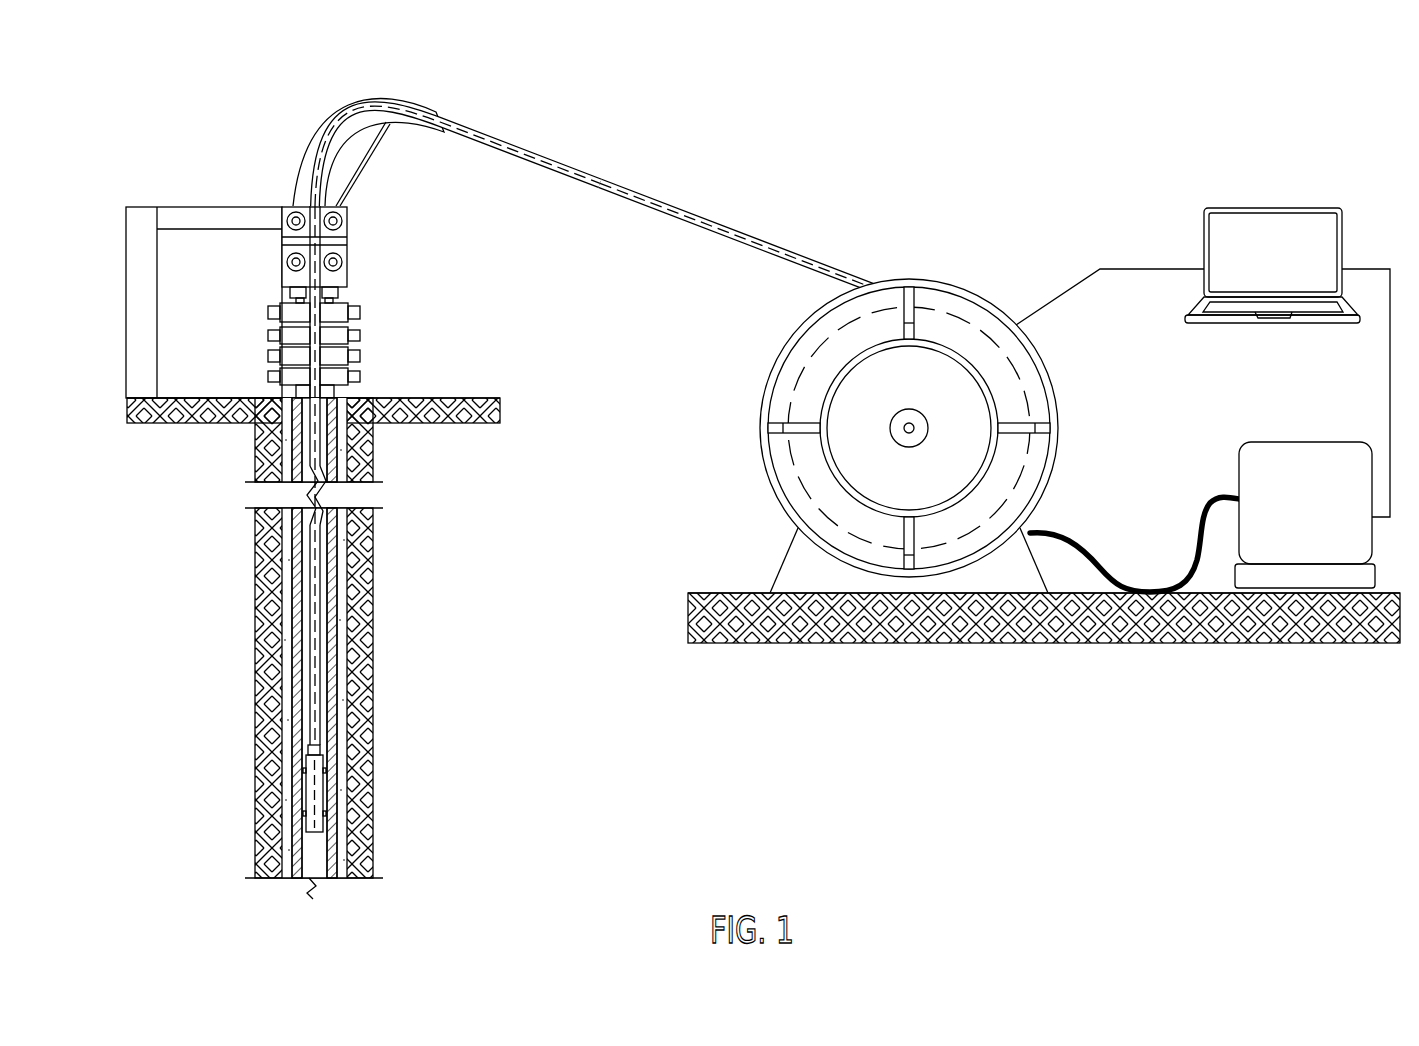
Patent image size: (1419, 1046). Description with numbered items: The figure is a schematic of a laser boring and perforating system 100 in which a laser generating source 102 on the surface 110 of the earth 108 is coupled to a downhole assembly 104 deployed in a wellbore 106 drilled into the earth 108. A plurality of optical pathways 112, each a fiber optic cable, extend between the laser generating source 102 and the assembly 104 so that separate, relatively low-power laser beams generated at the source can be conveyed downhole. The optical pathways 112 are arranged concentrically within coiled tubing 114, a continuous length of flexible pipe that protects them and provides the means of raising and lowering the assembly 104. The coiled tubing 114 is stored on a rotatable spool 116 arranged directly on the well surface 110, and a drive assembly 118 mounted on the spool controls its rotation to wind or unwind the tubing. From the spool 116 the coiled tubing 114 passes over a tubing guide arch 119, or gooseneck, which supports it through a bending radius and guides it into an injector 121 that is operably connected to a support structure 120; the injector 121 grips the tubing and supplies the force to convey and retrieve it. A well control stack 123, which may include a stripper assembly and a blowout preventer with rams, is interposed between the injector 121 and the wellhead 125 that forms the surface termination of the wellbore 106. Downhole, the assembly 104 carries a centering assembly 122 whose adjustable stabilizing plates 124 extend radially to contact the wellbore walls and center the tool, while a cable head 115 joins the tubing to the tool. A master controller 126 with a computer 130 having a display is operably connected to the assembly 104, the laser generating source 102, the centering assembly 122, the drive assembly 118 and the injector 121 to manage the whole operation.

The laser boring and perforating system 100 is at (181, 87).
The laser generating source 102 is at (1288, 492).
The downhole assembly 104 is at (340, 767).
The wellbore 106 is at (287, 690).
The earth 108 is at (152, 760).
The surface 110 is at (487, 398).
The optical pathways 112 is at (565, 152).
The coiled tubing 114 is at (667, 198).
The cable head 115 is at (336, 735).
The rotatable spool 116 is at (1047, 379).
The drive assembly 118 is at (915, 410).
The tubing guide arch 119 is at (427, 133).
The support structure 120 is at (133, 188).
The injector 121 is at (347, 262).
The centering assembly 122 is at (287, 774).
The well control stack 123 is at (360, 315).
The stabilizing plates 124 is at (327, 815).
The wellhead 125 is at (332, 392).
The master controller 126 is at (1235, 356).
The computer 130 is at (1306, 208).